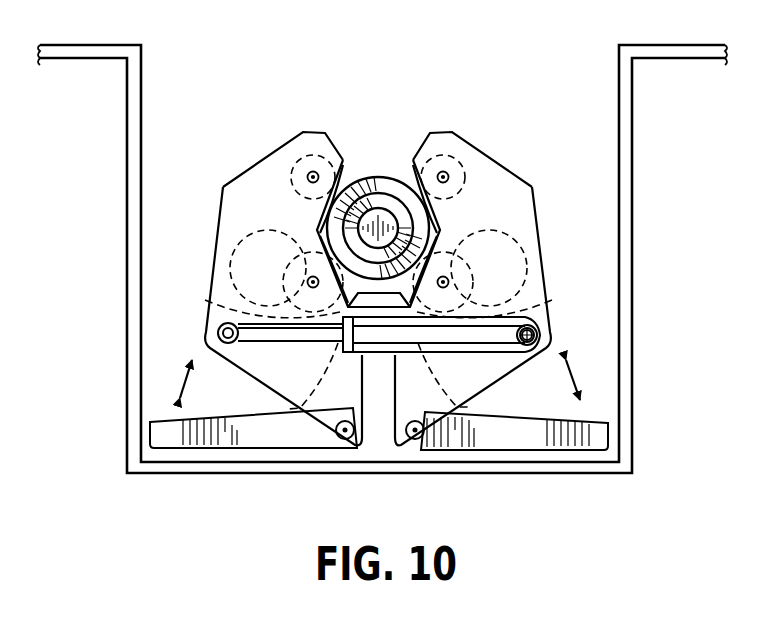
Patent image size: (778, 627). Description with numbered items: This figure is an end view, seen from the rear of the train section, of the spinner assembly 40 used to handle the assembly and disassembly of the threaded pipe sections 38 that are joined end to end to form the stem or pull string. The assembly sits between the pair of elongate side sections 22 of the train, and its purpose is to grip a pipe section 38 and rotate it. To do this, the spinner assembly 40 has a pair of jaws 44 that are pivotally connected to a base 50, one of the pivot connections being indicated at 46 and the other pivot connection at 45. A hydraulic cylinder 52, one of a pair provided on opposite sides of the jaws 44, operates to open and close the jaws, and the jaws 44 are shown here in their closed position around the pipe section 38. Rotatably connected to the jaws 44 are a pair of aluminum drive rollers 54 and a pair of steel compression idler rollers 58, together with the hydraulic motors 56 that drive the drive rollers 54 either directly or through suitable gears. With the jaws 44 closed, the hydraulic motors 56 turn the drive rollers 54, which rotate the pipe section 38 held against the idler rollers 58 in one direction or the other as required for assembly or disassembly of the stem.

The side section 22 is at (91, 44).
The spinner assembly 40 is at (343, 80).
The pipe section 38 is at (380, 180).
The jaw 44 is at (245, 208).
The compression idler roller 58 is at (309, 165).
The hydraulic motor 56 is at (240, 253).
The drive roller 54 is at (218, 318).
The hydraulic cylinder 52 is at (468, 353).
The base 50 is at (593, 438).
The jaw pivot connection 46 is at (348, 440).
The right arm pivot 45 is at (414, 440).